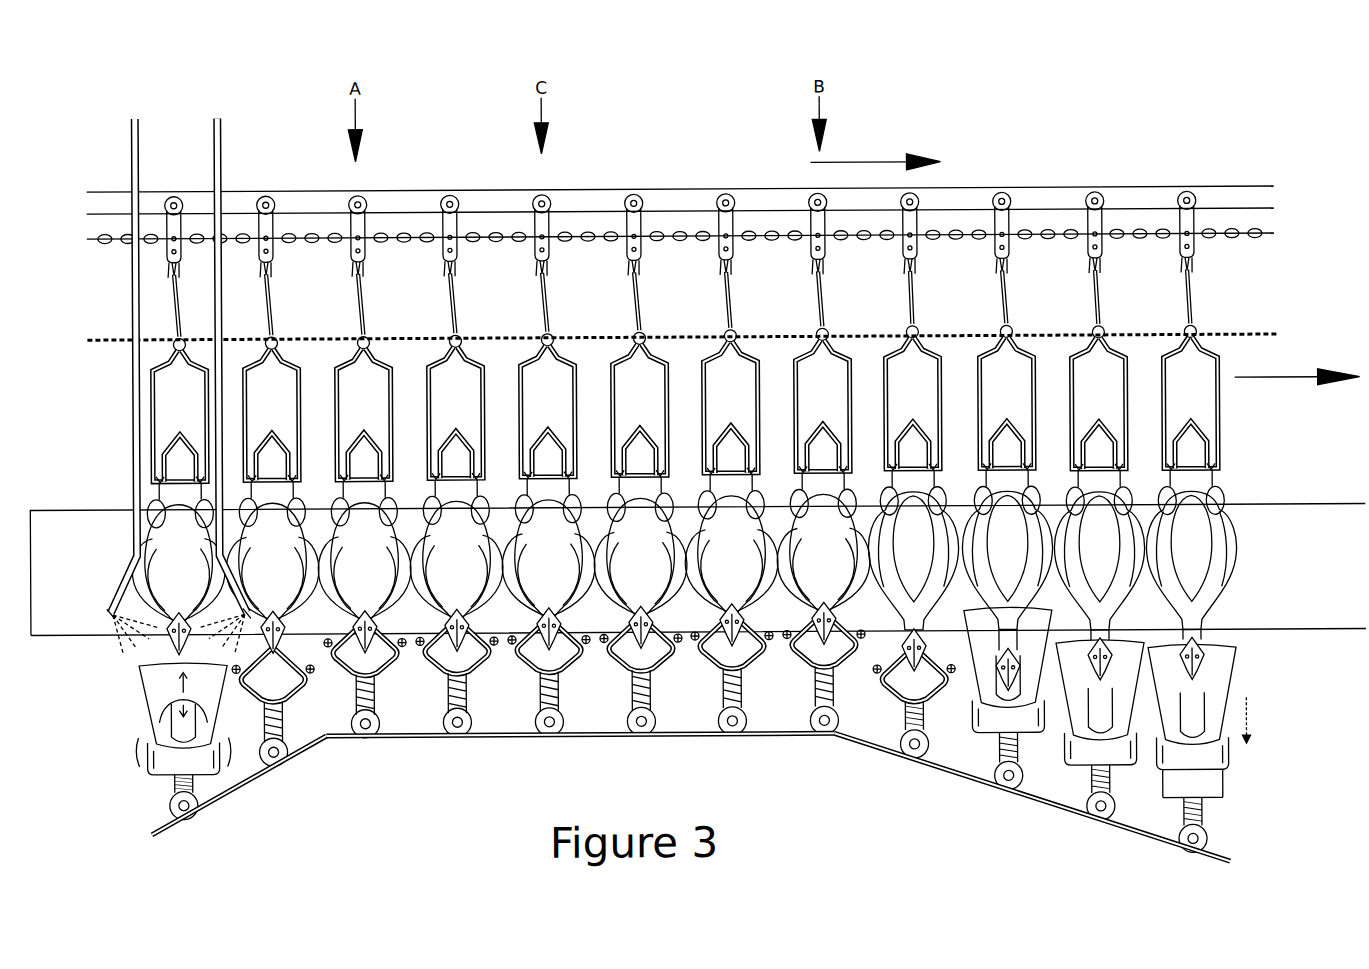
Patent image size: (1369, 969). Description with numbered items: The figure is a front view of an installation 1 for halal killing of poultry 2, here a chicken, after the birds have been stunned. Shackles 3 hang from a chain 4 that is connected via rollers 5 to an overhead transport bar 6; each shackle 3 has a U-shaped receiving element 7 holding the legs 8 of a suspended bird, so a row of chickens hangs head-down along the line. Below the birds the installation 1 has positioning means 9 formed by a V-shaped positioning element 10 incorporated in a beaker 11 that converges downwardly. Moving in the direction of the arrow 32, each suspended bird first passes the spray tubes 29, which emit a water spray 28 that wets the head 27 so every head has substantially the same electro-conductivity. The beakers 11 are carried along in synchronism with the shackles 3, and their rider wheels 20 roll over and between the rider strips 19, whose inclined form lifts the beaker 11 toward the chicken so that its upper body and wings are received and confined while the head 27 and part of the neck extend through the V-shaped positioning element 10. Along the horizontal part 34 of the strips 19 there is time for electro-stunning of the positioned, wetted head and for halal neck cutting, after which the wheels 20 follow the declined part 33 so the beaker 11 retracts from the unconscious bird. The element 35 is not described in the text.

The installation 1 is at (694, 174).
The poultry 2 is at (168, 543).
The shackle 3 is at (537, 307).
The chain 4 is at (297, 257).
The roller 5 is at (371, 191).
The transport bar 6 is at (581, 187).
The U-shaped receiving element 7 is at (386, 471).
The legs 8 is at (580, 488).
The positioning means 9 is at (132, 698).
The V-shaped positioning element 10 is at (151, 713).
The beaker 11 is at (221, 718).
The rider strips 19 is at (258, 786).
The rider wheels 20 is at (170, 811).
The head 27 is at (158, 646).
The water spray 28 is at (116, 631).
The spray tubes 29 is at (145, 162).
The arrow 32 is at (869, 158).
The declined part 33 is at (884, 752).
The horizontal part 34 is at (588, 743).
The housing 35 is at (1326, 530).